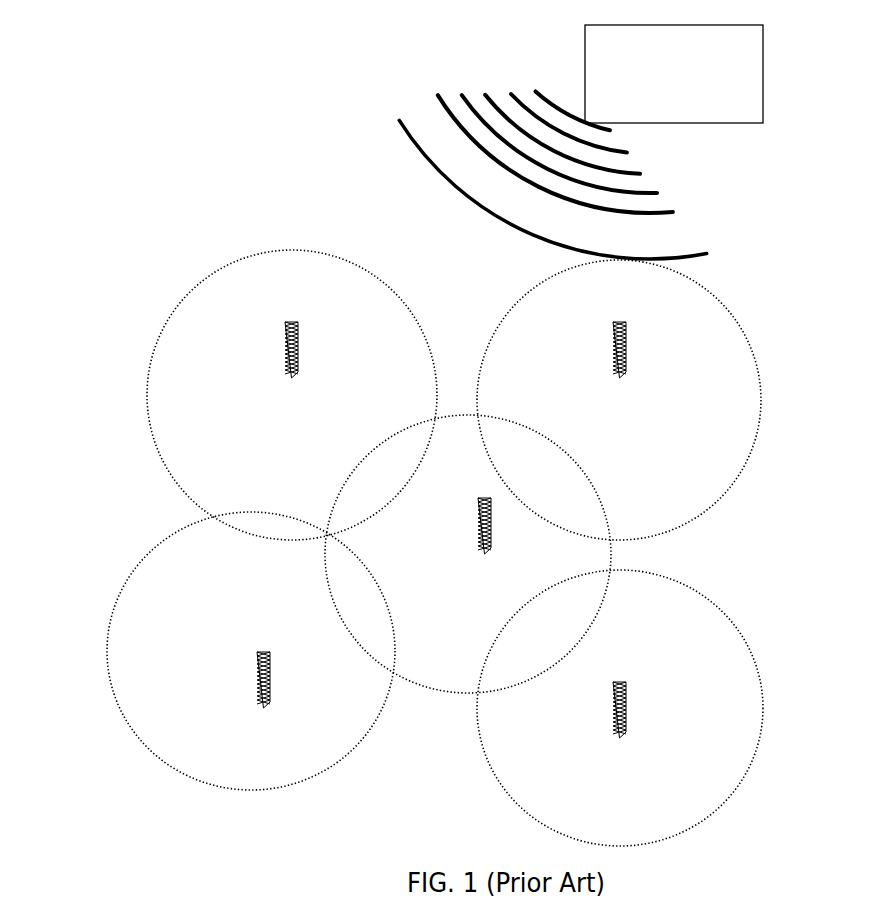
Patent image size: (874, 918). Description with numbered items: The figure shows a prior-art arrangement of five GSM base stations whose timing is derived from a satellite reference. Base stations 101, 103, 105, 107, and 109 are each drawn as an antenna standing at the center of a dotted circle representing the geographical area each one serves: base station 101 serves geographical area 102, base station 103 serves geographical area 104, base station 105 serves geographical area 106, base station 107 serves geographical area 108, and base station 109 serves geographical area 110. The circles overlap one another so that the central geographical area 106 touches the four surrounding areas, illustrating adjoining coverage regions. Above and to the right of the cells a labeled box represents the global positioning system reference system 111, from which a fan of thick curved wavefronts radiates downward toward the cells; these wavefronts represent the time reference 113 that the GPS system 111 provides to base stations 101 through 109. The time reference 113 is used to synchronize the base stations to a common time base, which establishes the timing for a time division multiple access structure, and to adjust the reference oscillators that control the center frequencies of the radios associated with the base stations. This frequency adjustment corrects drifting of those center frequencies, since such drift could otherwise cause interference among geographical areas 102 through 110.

The base station 101 is at (282, 335).
The geographical area 102 is at (170, 313).
The base station 103 is at (628, 353).
The geographical area 104 is at (767, 387).
The base station 105 is at (477, 545).
The geographical area 106 is at (465, 697).
The base station 107 is at (255, 697).
The geographical area 108 is at (107, 643).
The base station 109 is at (628, 712).
The geographical area 110 is at (762, 687).
The global positioning system reference system 111 is at (767, 105).
The time reference 113 is at (653, 257).